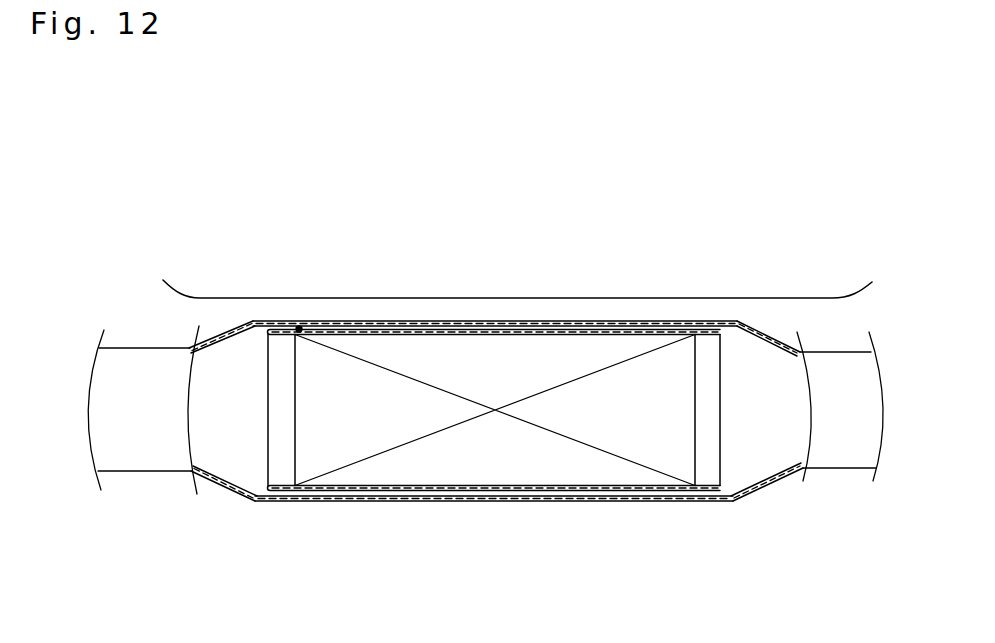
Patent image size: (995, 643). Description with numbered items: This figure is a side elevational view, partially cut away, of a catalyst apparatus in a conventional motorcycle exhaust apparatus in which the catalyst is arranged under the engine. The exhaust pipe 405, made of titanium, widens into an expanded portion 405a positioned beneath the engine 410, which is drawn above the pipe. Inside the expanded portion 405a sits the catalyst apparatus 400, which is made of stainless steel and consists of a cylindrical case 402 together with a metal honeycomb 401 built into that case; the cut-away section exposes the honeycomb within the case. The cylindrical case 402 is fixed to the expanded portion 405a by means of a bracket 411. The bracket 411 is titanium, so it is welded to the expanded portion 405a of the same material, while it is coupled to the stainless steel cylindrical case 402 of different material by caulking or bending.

The catalyst apparatus 400 is at (494, 463).
The metal honeycomb 401 is at (452, 468).
The cylindrical case 402 is at (483, 501).
The exhaust pipe 405 is at (137, 473).
The expanded portion 405a is at (375, 502).
The engine 410 is at (213, 298).
The bracket 411 is at (299, 328).